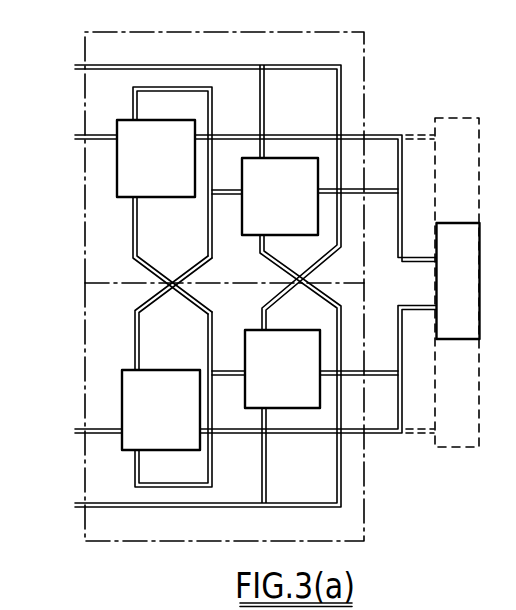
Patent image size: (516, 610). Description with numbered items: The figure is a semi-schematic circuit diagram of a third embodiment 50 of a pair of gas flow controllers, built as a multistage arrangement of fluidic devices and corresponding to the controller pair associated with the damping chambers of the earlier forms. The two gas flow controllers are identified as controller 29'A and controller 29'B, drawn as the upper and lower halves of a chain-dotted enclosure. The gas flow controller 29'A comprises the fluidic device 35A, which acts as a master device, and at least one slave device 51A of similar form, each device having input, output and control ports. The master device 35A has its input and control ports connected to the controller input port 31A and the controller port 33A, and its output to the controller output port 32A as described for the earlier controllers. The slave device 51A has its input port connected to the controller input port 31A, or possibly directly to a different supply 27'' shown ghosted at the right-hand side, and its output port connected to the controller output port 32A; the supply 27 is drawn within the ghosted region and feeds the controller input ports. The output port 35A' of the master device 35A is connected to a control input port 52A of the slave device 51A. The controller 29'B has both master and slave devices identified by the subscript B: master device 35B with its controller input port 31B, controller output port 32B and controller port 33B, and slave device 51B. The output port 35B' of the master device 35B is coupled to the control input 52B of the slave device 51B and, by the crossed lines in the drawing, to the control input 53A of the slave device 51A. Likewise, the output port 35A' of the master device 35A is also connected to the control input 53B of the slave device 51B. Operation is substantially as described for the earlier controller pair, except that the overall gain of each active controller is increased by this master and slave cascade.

The supply 27 is at (458, 281).
The different supply 27'' is at (464, 264).
The gas flow controller 29'A is at (262, 147).
The gas flow controller 29'B is at (256, 418).
The controller input port 31A is at (372, 195).
The controller input port 31B is at (382, 377).
The controller output port 32A is at (84, 147).
The controller output port 32B is at (83, 436).
The controller port 33A is at (76, 72).
The controller port 33B is at (85, 503).
The fluidic device 35A is at (280, 196).
The output port 35A' is at (194, 219).
The master device 35B is at (282, 369).
The output port 35B' is at (194, 352).
The third embodiment 50 is at (425, 496).
The slave device 51A is at (155, 172).
The slave device 51B is at (160, 423).
The control input port 52A is at (130, 118).
The control input 52B is at (133, 463).
The control input 53A is at (132, 198).
The control input 53B is at (133, 366).